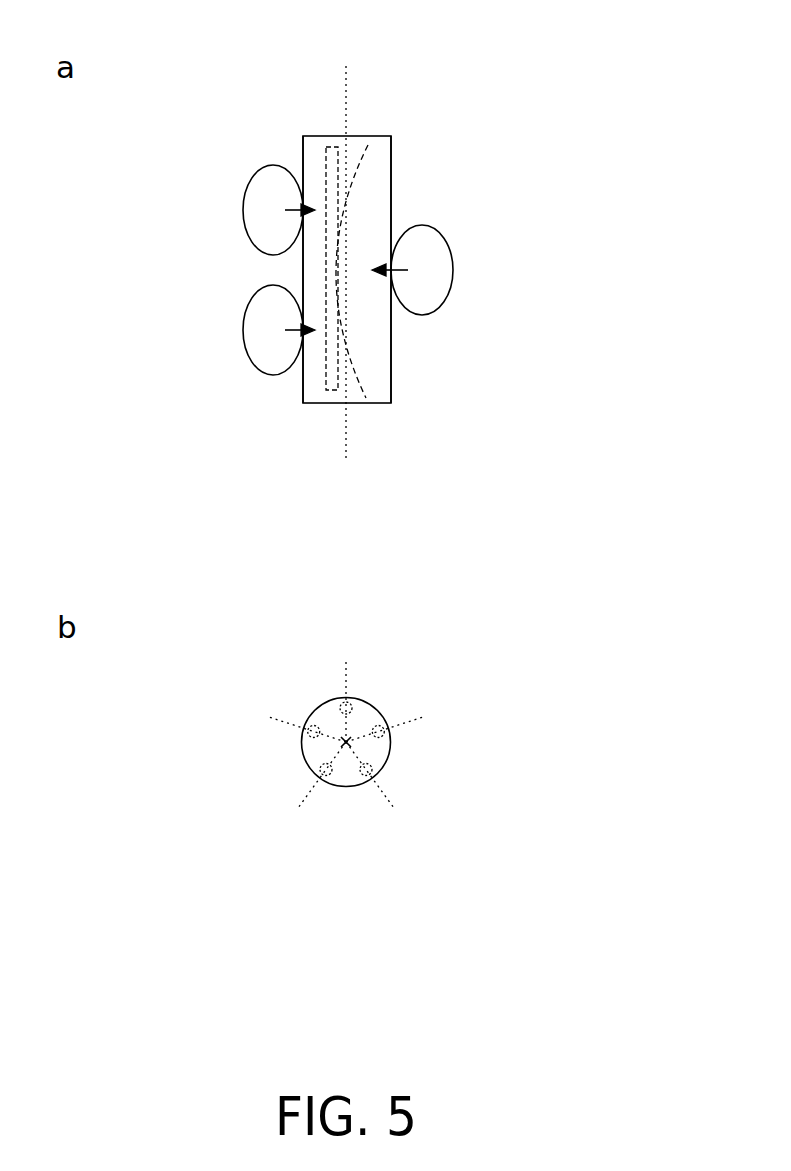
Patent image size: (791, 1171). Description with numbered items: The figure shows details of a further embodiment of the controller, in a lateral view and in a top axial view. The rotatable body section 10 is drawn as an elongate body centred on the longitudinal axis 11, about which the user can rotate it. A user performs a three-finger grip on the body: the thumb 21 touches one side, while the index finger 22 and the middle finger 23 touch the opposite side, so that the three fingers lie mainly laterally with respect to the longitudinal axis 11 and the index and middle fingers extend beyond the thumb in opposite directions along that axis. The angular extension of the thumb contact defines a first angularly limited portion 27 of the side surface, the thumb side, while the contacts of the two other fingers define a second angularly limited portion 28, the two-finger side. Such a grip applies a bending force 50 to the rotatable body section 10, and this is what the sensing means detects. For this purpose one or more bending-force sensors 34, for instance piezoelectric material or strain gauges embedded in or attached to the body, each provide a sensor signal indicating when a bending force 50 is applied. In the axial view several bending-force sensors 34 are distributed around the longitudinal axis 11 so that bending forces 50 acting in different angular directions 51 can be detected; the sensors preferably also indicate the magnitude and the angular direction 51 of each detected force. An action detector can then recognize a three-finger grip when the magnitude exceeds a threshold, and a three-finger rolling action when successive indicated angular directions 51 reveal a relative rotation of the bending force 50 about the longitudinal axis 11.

The rotatable body section 10 is at (400, 130).
The longitudinal axis 11 is at (338, 105).
The thumb 21 is at (436, 257).
The index finger 22 is at (258, 198).
The middle finger 23 is at (253, 347).
The first angularly limited portion 27 is at (397, 330).
The second angularly limited portion 28 is at (295, 390).
The bending-force sensor 34 is at (330, 163).
The bending force 50 is at (362, 173).
The angular direction 51 is at (295, 802).